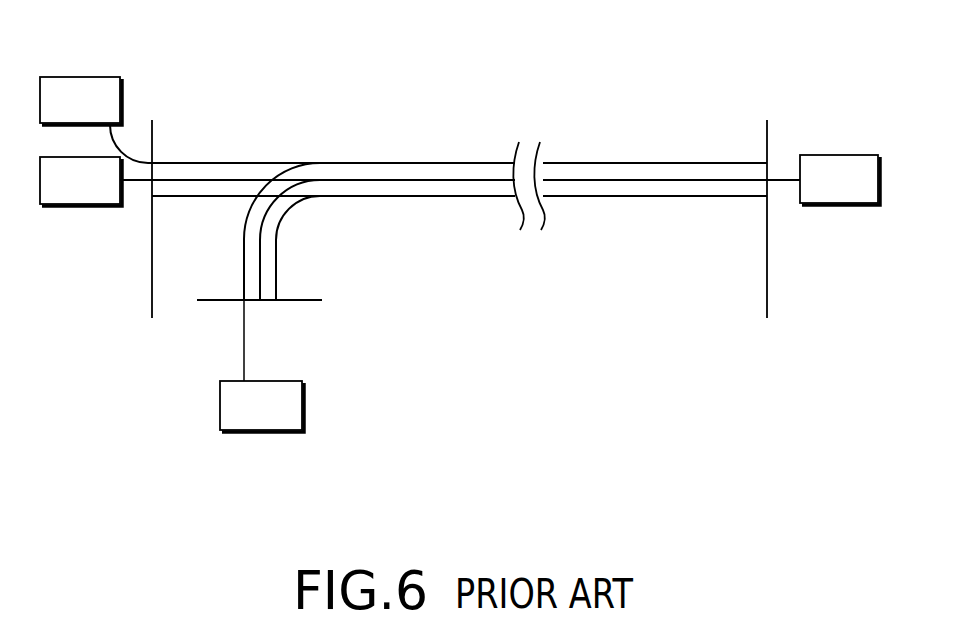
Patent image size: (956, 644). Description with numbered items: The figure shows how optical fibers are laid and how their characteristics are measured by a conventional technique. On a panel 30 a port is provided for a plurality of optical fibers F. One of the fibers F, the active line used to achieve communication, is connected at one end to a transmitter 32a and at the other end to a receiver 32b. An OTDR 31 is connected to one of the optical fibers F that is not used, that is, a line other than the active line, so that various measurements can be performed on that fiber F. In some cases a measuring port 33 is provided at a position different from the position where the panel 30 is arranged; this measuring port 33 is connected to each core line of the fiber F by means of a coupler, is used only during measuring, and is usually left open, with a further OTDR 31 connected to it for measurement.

The panel 30 is at (152, 298).
The OTDR 31 is at (80, 72).
The transmitter 32a is at (80, 207).
The receiver 32b is at (835, 206).
The measuring port 33 is at (307, 302).
The optical fibers F is at (460, 162).